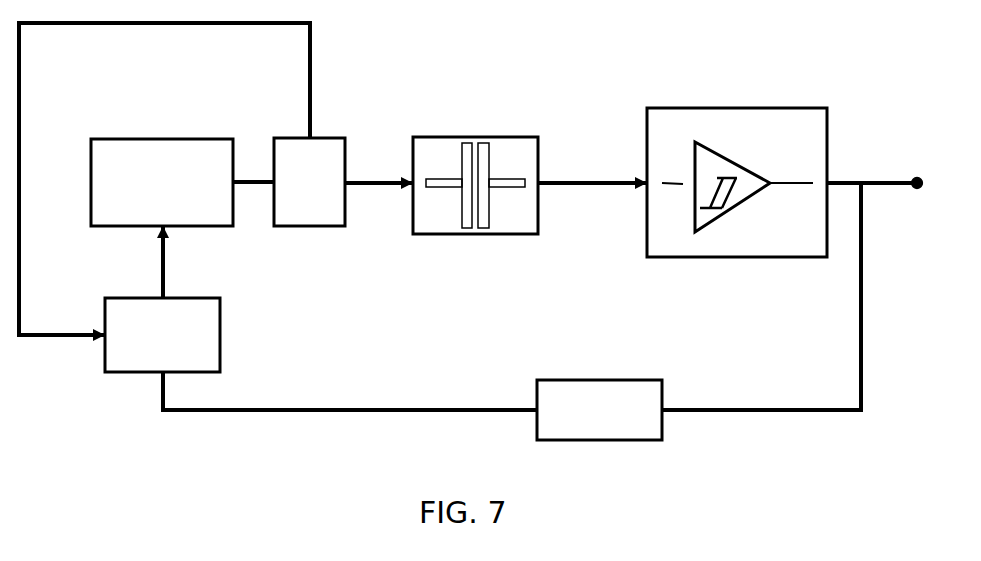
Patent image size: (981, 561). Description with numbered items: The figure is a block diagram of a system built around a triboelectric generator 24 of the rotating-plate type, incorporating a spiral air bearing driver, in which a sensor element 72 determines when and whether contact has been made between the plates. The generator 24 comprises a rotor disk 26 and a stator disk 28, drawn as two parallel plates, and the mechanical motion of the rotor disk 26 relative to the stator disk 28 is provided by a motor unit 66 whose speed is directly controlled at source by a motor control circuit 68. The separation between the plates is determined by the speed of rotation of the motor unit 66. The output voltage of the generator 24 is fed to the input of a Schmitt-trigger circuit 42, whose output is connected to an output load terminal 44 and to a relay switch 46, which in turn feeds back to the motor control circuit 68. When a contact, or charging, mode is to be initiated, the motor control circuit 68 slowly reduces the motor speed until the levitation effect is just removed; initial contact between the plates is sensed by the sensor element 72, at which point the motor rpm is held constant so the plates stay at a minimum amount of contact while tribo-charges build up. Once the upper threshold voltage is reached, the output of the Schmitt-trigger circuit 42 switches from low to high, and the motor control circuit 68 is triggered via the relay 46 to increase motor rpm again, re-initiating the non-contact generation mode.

The generator 24 is at (479, 178).
The rotor disk 26 is at (462, 140).
The stator disk 28 is at (483, 232).
The Schmitt-trigger circuit 42 is at (748, 107).
The output load terminal 44 is at (915, 177).
The relay switch 46 is at (662, 432).
The motor unit 66 is at (186, 139).
The motor control circuit 68 is at (132, 375).
The sensor element 72 is at (312, 228).